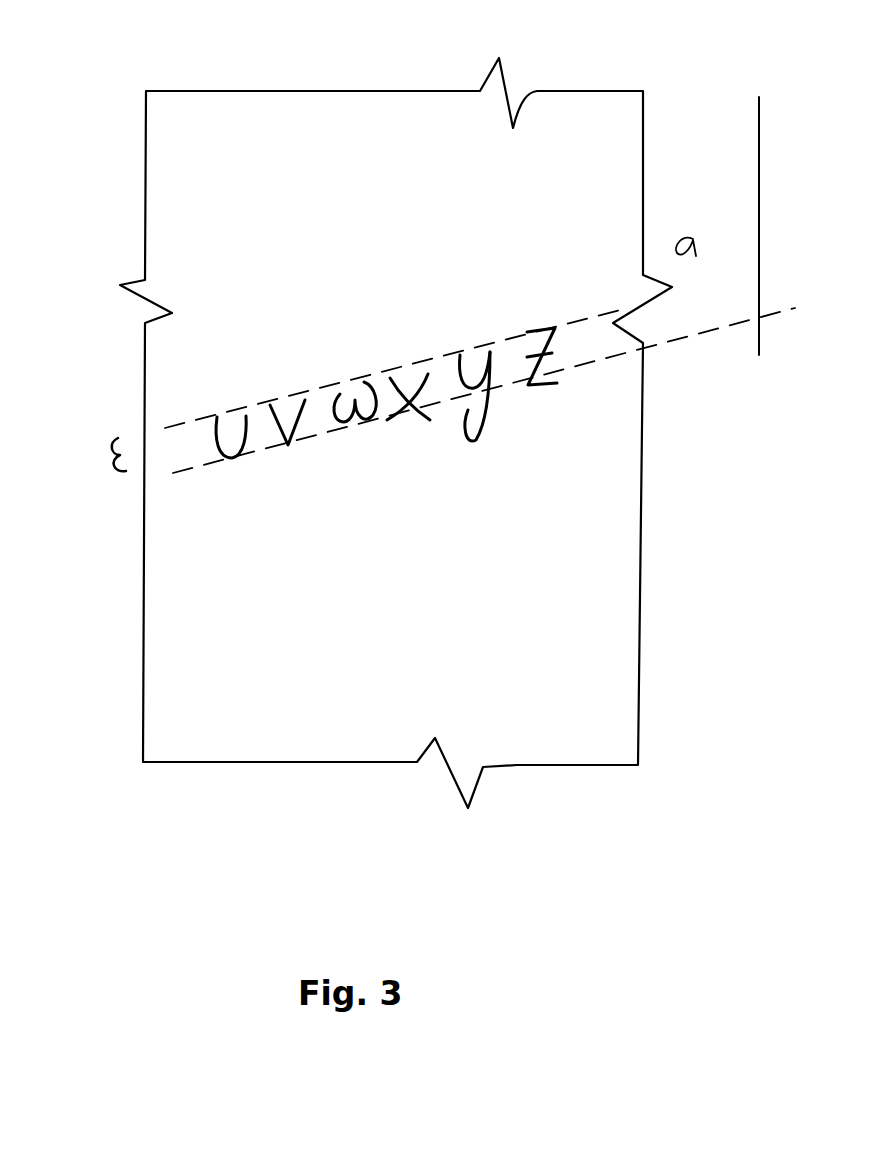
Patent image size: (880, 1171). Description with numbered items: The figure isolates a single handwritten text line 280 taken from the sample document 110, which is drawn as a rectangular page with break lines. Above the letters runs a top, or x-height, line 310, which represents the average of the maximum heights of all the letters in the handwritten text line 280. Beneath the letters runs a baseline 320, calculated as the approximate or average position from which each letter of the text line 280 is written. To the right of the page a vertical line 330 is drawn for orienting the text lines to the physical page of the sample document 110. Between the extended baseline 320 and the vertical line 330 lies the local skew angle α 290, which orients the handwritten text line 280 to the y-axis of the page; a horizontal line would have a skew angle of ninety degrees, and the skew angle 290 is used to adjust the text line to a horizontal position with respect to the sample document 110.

The sample document 110 is at (246, 84).
The handwritten text line 280 is at (103, 457).
The local skew angle α 290 is at (755, 258).
The top (x-height) line 310 is at (576, 310).
The baseline 320 is at (416, 430).
The vertical line 330 is at (758, 342).